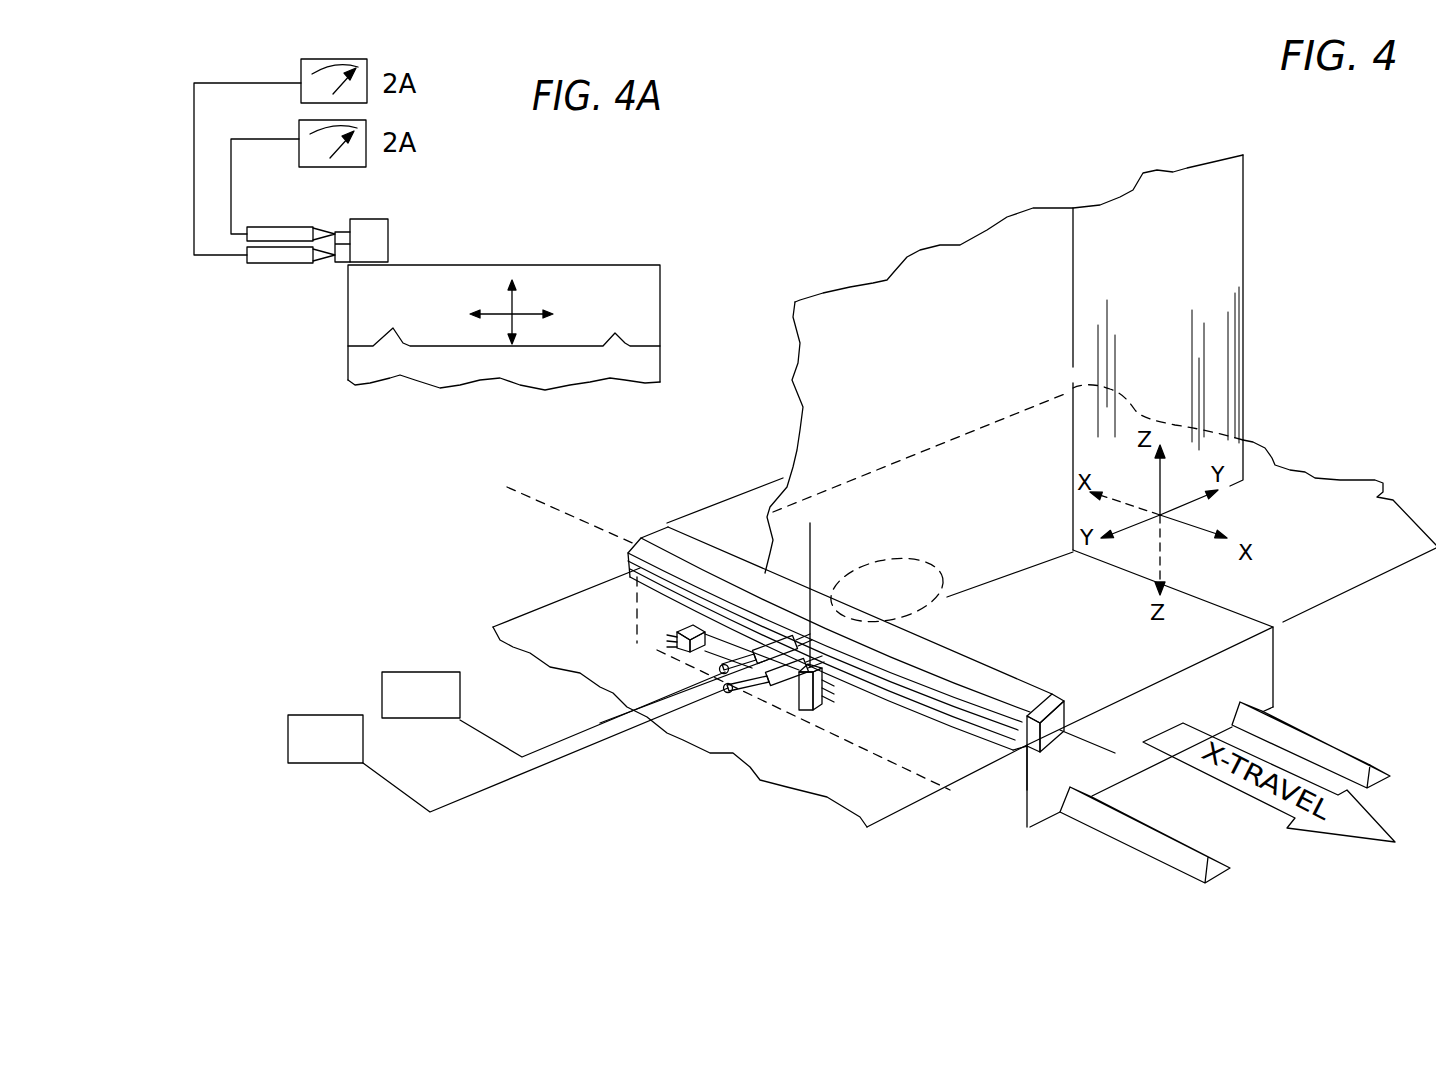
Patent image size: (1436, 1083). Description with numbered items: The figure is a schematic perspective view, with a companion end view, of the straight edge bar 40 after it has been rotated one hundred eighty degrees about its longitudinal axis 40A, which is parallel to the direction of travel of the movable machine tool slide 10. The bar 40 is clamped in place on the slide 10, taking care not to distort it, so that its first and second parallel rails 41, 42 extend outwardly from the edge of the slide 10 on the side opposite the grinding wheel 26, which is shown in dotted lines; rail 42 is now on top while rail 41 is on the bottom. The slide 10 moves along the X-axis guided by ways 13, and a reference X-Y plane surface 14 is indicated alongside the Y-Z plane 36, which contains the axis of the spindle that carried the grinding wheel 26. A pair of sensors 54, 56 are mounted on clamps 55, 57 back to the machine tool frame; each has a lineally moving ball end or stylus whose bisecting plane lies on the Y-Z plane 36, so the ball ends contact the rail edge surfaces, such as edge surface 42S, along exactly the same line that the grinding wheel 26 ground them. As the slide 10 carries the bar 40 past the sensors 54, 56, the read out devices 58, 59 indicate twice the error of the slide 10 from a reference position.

In FIG. 4A, the machine tool slide 10 is at (573, 280).
In FIG. 4, the machine tool slide 10 is at (1267, 660).
In FIG. 4, the ways 13 is at (1307, 742).
In FIG. 4, the X-Y plane surface 14 is at (1343, 577).
In FIG. 4, the grinding wheel 26 is at (867, 563).
In FIG. 4, the Y-Z plane 36 is at (1230, 225).
In FIG. 4A, the bar 40 is at (378, 234).
In FIG. 4, the bar 40 is at (1060, 717).
In FIG. 4, the longitudinal axis 40A is at (1090, 745).
In FIG. 4, the first rail 41 is at (1020, 750).
In FIG. 4A, the second rail 42 is at (340, 232).
In FIG. 4, the second rail 42 is at (1027, 720).
In FIG. 4, the edge surface 42S is at (943, 705).
In FIG. 4A, the sensor 54 is at (265, 232).
In FIG. 4, the sensor 54 is at (718, 677).
In FIG. 4, the clamp 55 is at (667, 648).
In FIG. 4A, the sensor 56 is at (258, 257).
In FIG. 4, the sensor 56 is at (730, 680).
In FIG. 4, the clamp 57 is at (800, 688).
In FIG. 4, the read out device 58 is at (430, 633).
In FIG. 4, the read out device 59 is at (317, 715).